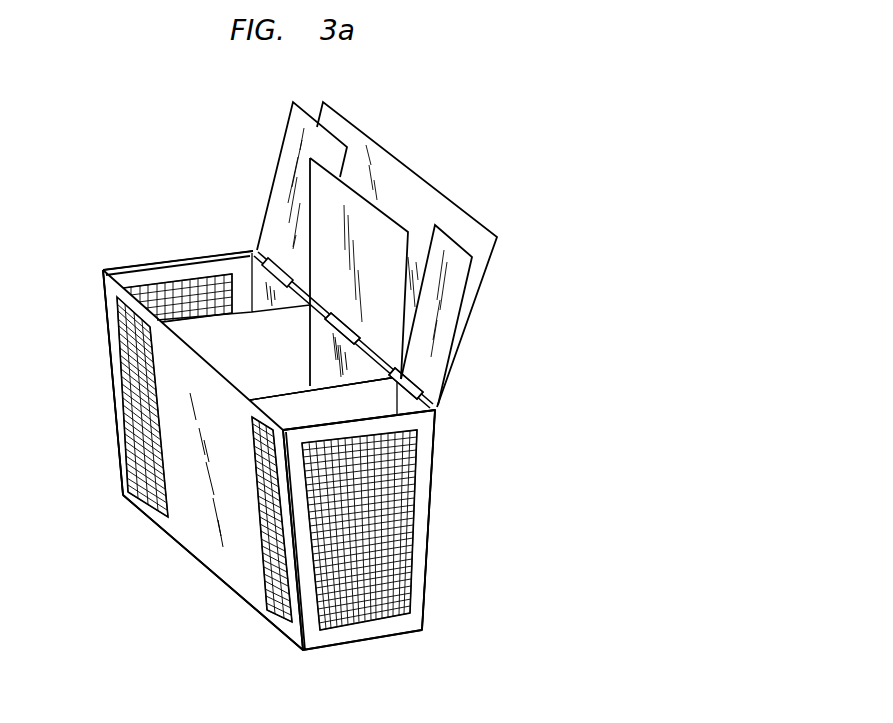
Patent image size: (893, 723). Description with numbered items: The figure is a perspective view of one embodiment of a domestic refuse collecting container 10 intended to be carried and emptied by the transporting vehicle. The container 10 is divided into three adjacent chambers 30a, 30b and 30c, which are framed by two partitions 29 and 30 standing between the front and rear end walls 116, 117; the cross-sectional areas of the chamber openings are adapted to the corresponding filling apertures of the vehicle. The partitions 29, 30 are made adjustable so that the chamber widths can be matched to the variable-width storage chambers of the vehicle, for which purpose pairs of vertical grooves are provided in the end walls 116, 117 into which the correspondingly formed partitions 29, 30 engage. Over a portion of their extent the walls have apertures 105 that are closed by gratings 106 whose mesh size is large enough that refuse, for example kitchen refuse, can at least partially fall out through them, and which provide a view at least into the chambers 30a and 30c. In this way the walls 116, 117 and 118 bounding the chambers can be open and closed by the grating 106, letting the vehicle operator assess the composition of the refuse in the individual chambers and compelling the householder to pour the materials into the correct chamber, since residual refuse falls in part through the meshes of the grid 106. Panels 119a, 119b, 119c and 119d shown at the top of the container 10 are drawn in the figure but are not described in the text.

The collecting container 10 is at (88, 224).
The partition 29 is at (287, 368).
The partition 30 is at (337, 421).
The chamber 30a is at (242, 268).
The chamber 30b is at (378, 362).
The chamber 30c is at (382, 404).
The aperture 105 is at (142, 287).
The grating 106 is at (193, 287).
The end wall 116 is at (190, 532).
The end wall 117 is at (428, 547).
The wall 118 is at (102, 295).
The lid panel 119a is at (460, 263).
The lid panel 119b is at (290, 124).
The lid panel 119c is at (330, 190).
The lid panel 119d is at (410, 182).